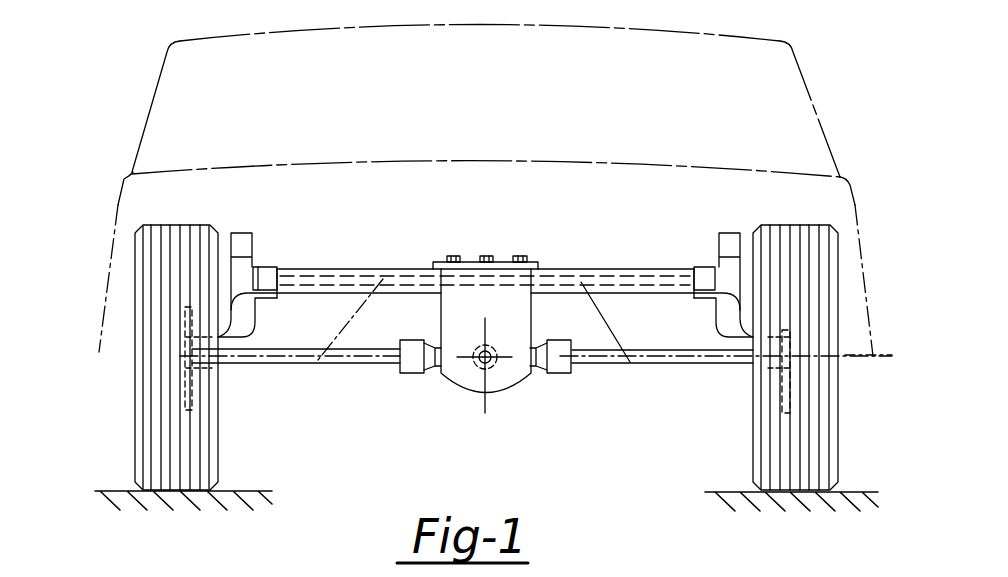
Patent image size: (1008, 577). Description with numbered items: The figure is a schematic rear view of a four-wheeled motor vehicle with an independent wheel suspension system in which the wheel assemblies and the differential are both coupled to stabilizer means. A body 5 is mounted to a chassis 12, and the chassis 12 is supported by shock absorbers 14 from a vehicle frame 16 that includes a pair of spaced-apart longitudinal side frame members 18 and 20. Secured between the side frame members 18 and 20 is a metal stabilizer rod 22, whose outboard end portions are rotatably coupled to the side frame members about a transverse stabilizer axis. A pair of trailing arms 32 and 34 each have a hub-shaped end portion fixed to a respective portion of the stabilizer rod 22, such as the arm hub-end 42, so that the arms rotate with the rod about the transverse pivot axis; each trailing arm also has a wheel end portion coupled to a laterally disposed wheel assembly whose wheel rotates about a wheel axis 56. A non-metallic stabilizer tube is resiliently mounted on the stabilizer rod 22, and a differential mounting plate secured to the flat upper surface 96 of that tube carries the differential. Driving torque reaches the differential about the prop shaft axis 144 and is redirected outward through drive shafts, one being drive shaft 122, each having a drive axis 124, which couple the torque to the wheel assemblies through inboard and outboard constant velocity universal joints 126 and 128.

The body 5 is at (103, 287).
The chassis 12 is at (485, 319).
The shock absorbers 14 is at (343, 333).
The vehicle frame 16 is at (485, 323).
The side frame member 18 is at (241, 265).
The side frame member 20 is at (728, 265).
The stabilizer rod 22 is at (594, 282).
The trailing arm 32 is at (710, 313).
The trailing arm 34 is at (256, 315).
The arm hub-end 42 is at (271, 266).
The wheel axis 56 is at (868, 358).
The flat upper surface 96 is at (648, 268).
The drive shaft 122 is at (312, 364).
The drive axis 124 is at (286, 362).
The inboard constant velocity universal joint 126 is at (413, 374).
The outboard constant velocity universal joint 128 is at (196, 360).
The prop shaft axis 144 is at (480, 369).